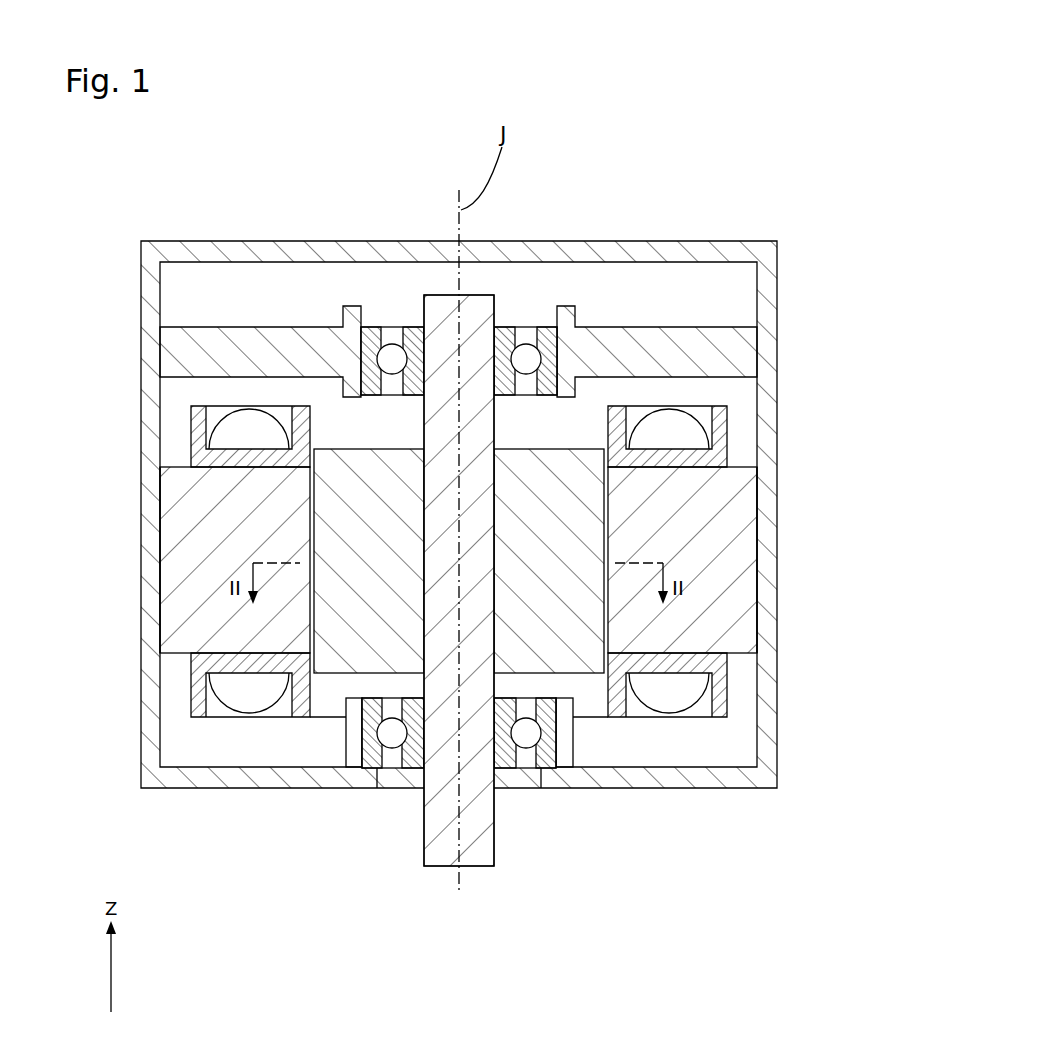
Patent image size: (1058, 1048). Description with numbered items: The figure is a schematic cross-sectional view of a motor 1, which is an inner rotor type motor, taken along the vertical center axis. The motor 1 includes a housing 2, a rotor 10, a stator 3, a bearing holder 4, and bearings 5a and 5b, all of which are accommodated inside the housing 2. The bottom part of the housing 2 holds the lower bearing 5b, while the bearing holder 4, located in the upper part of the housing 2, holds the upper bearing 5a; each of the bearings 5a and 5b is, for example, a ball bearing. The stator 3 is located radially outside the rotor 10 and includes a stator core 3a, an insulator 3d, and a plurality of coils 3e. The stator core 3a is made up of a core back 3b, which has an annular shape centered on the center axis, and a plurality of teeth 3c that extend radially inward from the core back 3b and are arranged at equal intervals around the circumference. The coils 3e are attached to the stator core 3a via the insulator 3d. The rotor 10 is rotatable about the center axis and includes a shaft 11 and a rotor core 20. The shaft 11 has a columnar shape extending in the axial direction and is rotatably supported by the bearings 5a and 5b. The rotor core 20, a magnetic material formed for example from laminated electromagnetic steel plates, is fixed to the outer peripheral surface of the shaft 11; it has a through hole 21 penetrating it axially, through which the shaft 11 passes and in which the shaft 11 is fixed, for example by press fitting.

The motor 1 is at (713, 127).
The housing 2 is at (650, 245).
The stator 3 is at (744, 460).
The stator core 3a is at (835, 517).
The core back 3b is at (742, 612).
The teeth 3c is at (687, 523).
The insulator 3d is at (727, 427).
The coils 3e is at (680, 427).
The bearing holder 4 is at (610, 340).
The bearing 5a is at (396, 345).
The bearing 5b is at (392, 750).
The rotor 10 is at (590, 693).
The shaft 11 is at (487, 833).
The rotor core 20 is at (333, 690).
The through hole 21 is at (470, 635).